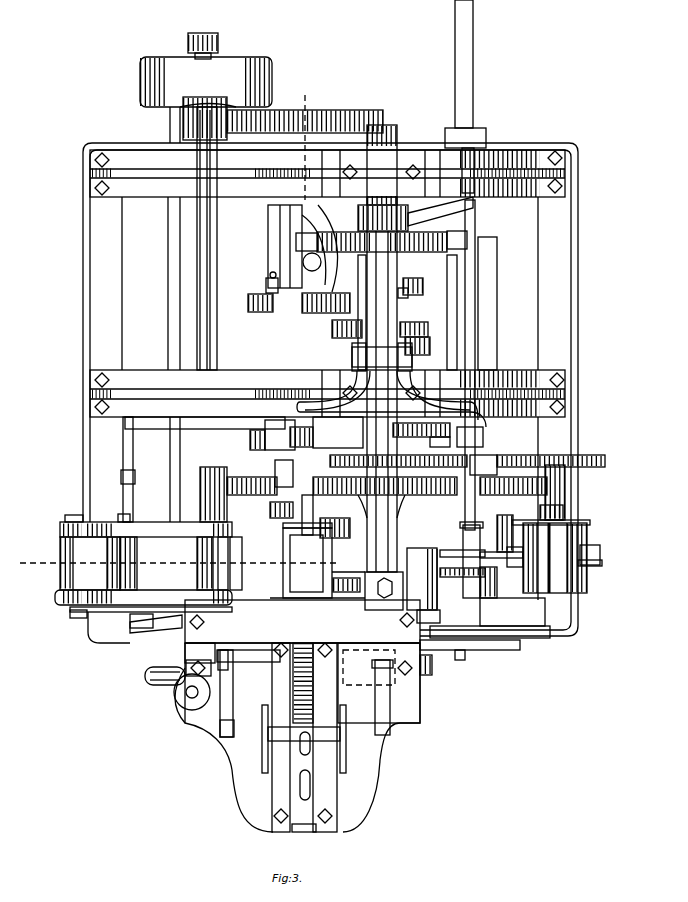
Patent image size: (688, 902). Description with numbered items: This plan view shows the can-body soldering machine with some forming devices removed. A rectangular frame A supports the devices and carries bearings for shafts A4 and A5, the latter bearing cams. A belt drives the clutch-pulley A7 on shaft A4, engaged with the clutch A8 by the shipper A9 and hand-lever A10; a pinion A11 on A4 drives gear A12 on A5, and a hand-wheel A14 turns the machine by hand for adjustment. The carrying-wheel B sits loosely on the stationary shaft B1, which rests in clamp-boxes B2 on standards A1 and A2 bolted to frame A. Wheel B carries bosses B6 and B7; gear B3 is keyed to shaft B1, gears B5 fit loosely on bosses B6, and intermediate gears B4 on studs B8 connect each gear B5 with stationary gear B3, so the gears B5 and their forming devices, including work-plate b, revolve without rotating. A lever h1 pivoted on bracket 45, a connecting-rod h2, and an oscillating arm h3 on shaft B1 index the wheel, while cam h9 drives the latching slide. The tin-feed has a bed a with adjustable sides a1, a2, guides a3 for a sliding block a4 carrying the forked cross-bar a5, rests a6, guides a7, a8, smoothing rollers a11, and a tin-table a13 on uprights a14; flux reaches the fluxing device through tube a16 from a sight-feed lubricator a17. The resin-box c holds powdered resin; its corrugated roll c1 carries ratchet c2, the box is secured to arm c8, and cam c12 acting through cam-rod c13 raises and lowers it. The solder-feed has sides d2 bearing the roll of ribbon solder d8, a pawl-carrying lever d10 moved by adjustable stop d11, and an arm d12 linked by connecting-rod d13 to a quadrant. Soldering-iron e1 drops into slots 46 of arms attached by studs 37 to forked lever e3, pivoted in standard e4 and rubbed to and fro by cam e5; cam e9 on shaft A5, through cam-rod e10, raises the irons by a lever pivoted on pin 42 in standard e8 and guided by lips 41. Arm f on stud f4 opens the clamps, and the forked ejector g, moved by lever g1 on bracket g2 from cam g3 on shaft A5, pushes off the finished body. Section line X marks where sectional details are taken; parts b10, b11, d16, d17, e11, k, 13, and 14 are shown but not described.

The frame A is at (330, 389).
The standard A1 is at (327, 173).
The standard A2 is at (327, 393).
The shaft A4 is at (217, 352).
The shaft A5 is at (300, 347).
The clutch-pulley A7 is at (140, 82).
The clutch A8 is at (204, 33).
The shipper A9 is at (200, 97).
The hand-lever A10 is at (154, 636).
The pinion A11 is at (183, 128).
The gear A12 is at (345, 112).
The hand-wheel A14 is at (145, 677).
The carrying-wheel B is at (252, 492).
The stationary shaft B1 is at (392, 125).
The clamp-boxes B2 is at (420, 160).
The gear B3 is at (385, 497).
The intermediate gears B4 is at (440, 495).
The gears B5 is at (606, 458).
The hubs or bosses B6 is at (565, 483).
The bosses B7 is at (492, 456).
The studs B8 is at (275, 474).
The section line X is at (178, 556).
The bed a is at (302, 737).
The side a1 is at (212, 735).
The side a2 is at (379, 683).
The guides a3 is at (272, 800).
The sliding block a4 is at (306, 832).
The cross-bar a5 is at (304, 692).
The rests a6 is at (248, 693).
The guides a7 is at (234, 728).
The guides a8 is at (306, 666).
The rollers a11 is at (375, 662).
The tin-table a13 is at (320, 643).
The uprights a14 is at (215, 628).
The tube a16 is at (190, 662).
The sight-feed lubricator a17 is at (176, 700).
The work-plate b is at (590, 524).
The bearing b10 is at (540, 510).
The link b11 is at (458, 556).
The resin-box c is at (306, 560).
The corrugated roll c1 is at (429, 617).
The ratchet c2 is at (484, 522).
The arm c8 is at (402, 579).
The cam c12 is at (432, 668).
The cam-rod c13 is at (468, 652).
The sides d2 is at (143, 563).
The roll of ribbon solder d8 is at (90, 563).
The pawl-carrying lever d10 is at (115, 512).
The adjustable stop d11 is at (65, 518).
The arm or crank d12 is at (235, 609).
The connecting-rod d13 is at (58, 621).
The block d16 is at (310, 516).
The bar d17 is at (244, 563).
The soldering-iron e1 is at (299, 303).
The forked lever e3 is at (392, 242).
The standard e4 is at (430, 345).
The cam e5 is at (414, 322).
The standard e8 is at (352, 350).
The cam e9 is at (358, 222).
The cam-rod e10 is at (266, 288).
The rod e11 is at (478, 638).
The arm f is at (500, 594).
The stud f4 is at (500, 620).
The ejector g is at (465, 265).
The lever g1 is at (440, 215).
The bracket g2 is at (322, 262).
The cam g3 is at (268, 236).
The lever h1 is at (142, 469).
The connecting-rod h2 is at (421, 435).
The oscillating arm h3 is at (338, 432).
The cam h9 is at (411, 280).
The bracket k is at (262, 449).
The nut 13 is at (585, 569).
The bolt 14 is at (600, 544).
The studs 37 is at (480, 240).
The lips 41 is at (504, 428).
The pin 42 is at (352, 359).
The bracket 45 is at (135, 478).
The slots 46 is at (466, 545).